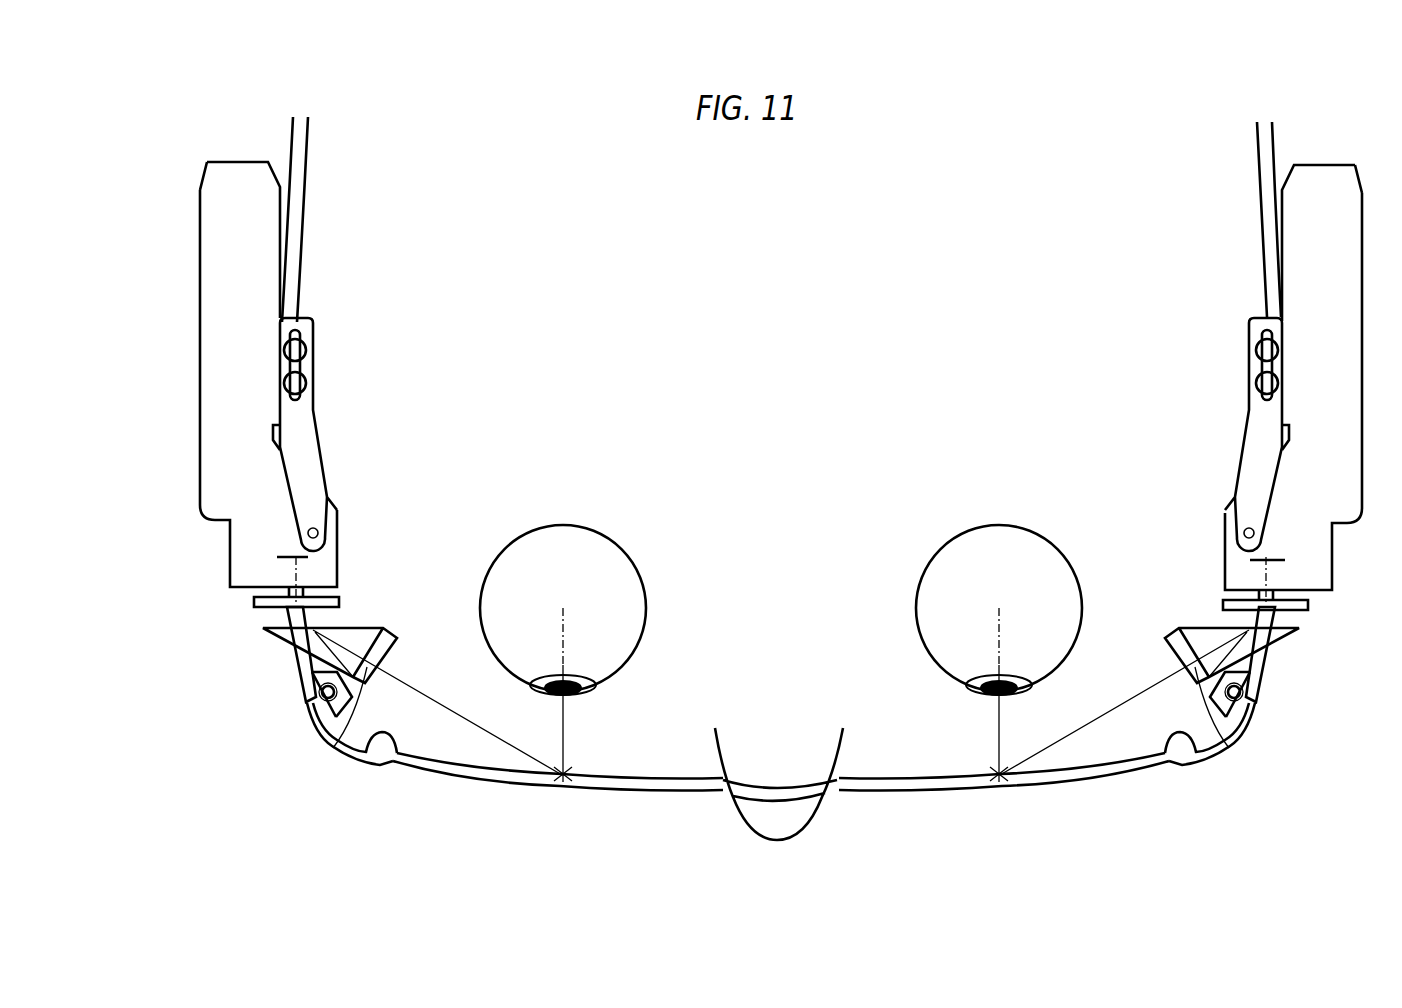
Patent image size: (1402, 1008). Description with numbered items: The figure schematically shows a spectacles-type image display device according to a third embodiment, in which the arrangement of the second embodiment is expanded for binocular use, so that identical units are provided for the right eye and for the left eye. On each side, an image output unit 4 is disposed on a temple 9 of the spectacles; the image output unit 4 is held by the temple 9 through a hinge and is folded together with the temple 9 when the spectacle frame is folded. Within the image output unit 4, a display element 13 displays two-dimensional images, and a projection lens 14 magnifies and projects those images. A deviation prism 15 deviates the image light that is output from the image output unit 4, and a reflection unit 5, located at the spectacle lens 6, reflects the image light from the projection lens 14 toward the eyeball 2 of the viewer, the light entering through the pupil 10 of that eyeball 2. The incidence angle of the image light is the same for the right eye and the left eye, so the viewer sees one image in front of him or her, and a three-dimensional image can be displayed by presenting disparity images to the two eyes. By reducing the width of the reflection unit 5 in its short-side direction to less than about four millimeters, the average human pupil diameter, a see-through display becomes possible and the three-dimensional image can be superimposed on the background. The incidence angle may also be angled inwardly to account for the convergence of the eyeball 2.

The eyeball 2 is at (920, 478).
The image output unit 4 is at (1180, 268).
The reflection unit 5 is at (1008, 846).
The spectacle lens 6 is at (884, 846).
The temple 9 is at (1178, 145).
The pupil 10 is at (876, 600).
The display element 13 is at (1165, 590).
The projection lens 14 is at (1226, 802).
The deviation prism 15 is at (1348, 692).